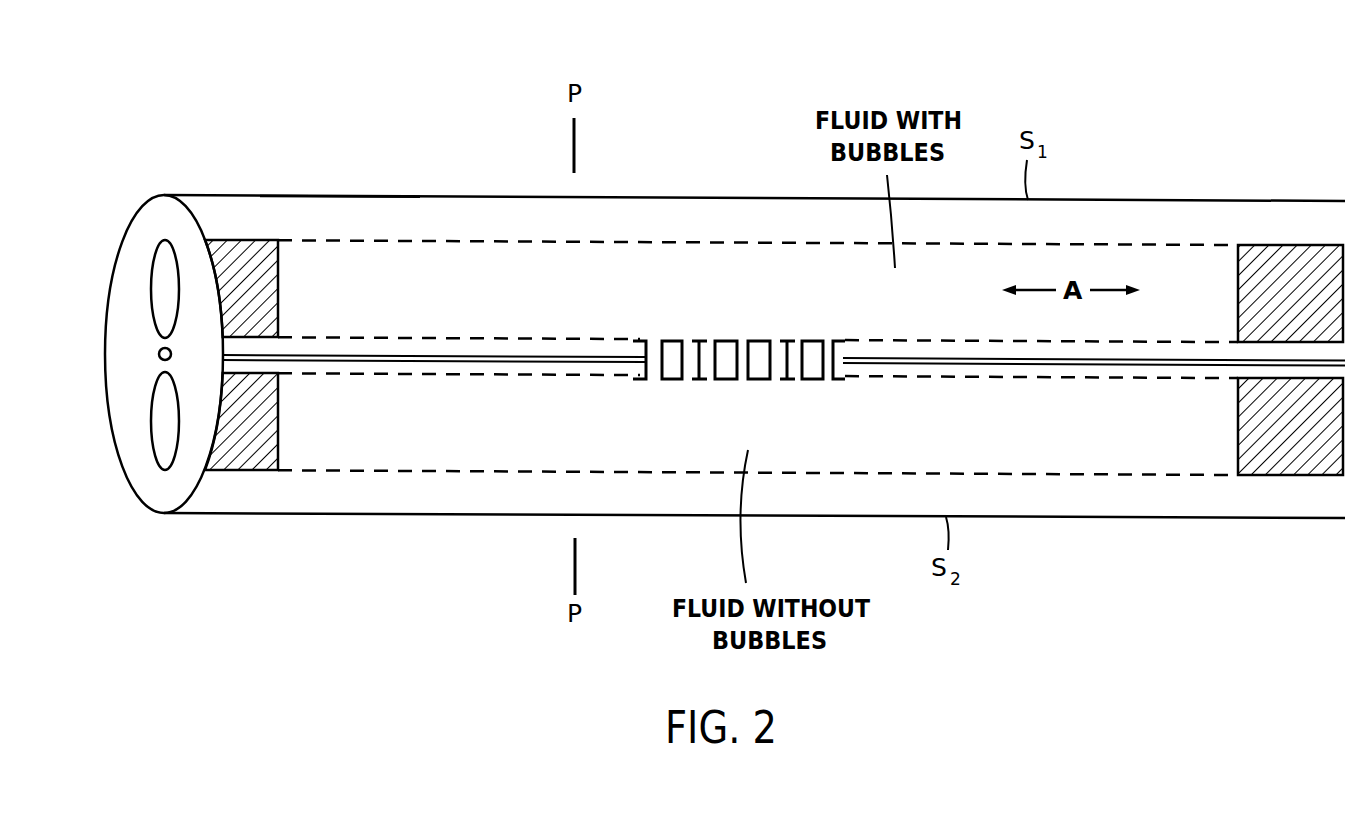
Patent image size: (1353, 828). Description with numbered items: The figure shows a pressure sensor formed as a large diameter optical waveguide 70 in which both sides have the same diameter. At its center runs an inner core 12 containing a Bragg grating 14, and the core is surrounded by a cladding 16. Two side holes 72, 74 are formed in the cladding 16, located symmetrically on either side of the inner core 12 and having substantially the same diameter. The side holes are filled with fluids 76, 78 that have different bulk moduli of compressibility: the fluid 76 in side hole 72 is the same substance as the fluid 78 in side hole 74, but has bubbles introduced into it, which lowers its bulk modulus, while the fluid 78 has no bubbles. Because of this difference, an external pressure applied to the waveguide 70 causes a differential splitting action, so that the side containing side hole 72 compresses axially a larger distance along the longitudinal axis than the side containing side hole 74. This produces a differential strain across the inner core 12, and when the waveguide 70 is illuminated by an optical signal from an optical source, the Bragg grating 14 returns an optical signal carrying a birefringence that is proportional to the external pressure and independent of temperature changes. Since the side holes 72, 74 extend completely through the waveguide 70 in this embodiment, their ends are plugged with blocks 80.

The large diameter optical waveguide 70 is at (318, 76).
The cladding 16 is at (338, 218).
The fluid 76 is at (402, 262).
The fluid 78 is at (343, 445).
The side hole 72 is at (160, 284).
The side hole 74 is at (160, 421).
The inner core 12 is at (159, 353).
The Bragg grating 14 is at (717, 325).
The blocks 80 is at (223, 252).